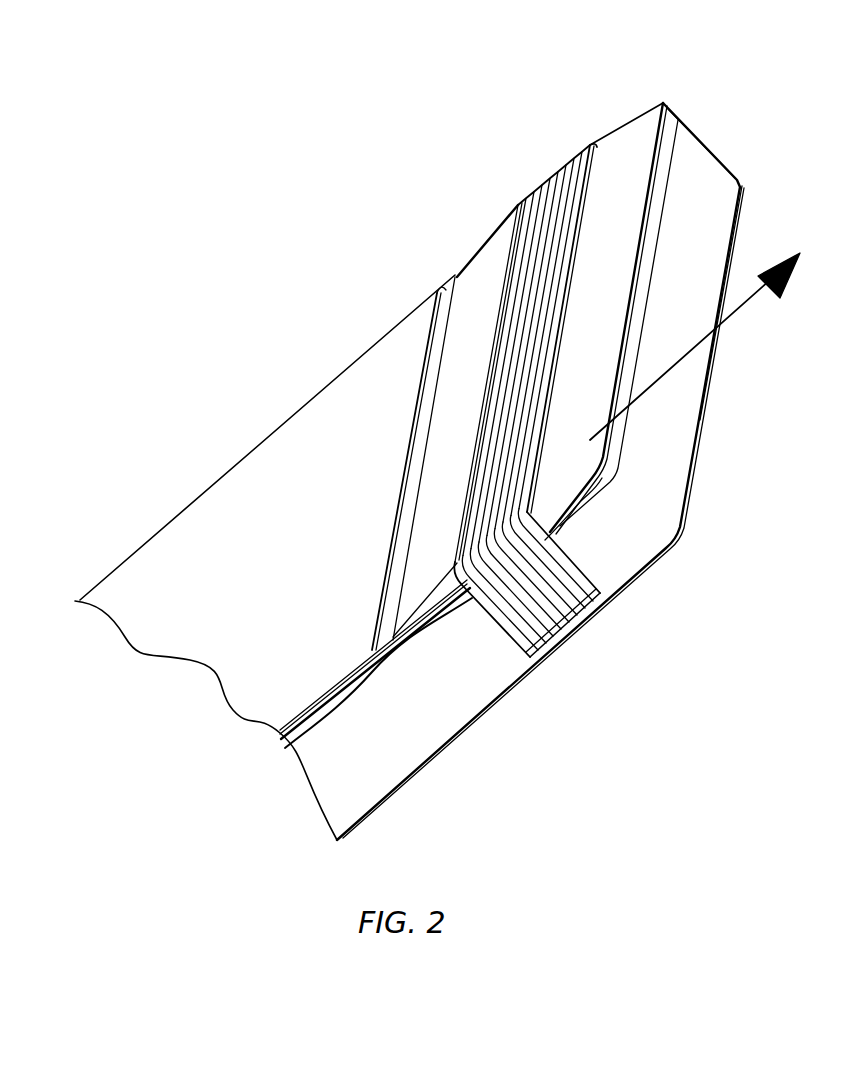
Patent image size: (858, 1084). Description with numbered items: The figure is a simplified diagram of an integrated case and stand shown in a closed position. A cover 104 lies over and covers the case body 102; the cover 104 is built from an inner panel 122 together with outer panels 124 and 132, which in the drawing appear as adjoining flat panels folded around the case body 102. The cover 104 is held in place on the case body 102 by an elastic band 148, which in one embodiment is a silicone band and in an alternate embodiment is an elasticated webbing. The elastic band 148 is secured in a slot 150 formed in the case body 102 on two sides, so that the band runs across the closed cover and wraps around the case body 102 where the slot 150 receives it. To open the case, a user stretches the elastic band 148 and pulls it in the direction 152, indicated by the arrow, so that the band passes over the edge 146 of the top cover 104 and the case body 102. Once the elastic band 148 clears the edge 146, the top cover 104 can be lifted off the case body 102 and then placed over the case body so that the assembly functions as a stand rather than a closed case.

The case body 102 is at (703, 230).
The cover 104 is at (314, 300).
The inner panel 122 is at (373, 677).
The outer panel 124 is at (255, 490).
The outer panel 132 is at (630, 152).
The edge 146 is at (668, 147).
The elastic band 148 is at (548, 183).
The slot 150 is at (578, 636).
The direction 152 is at (737, 310).